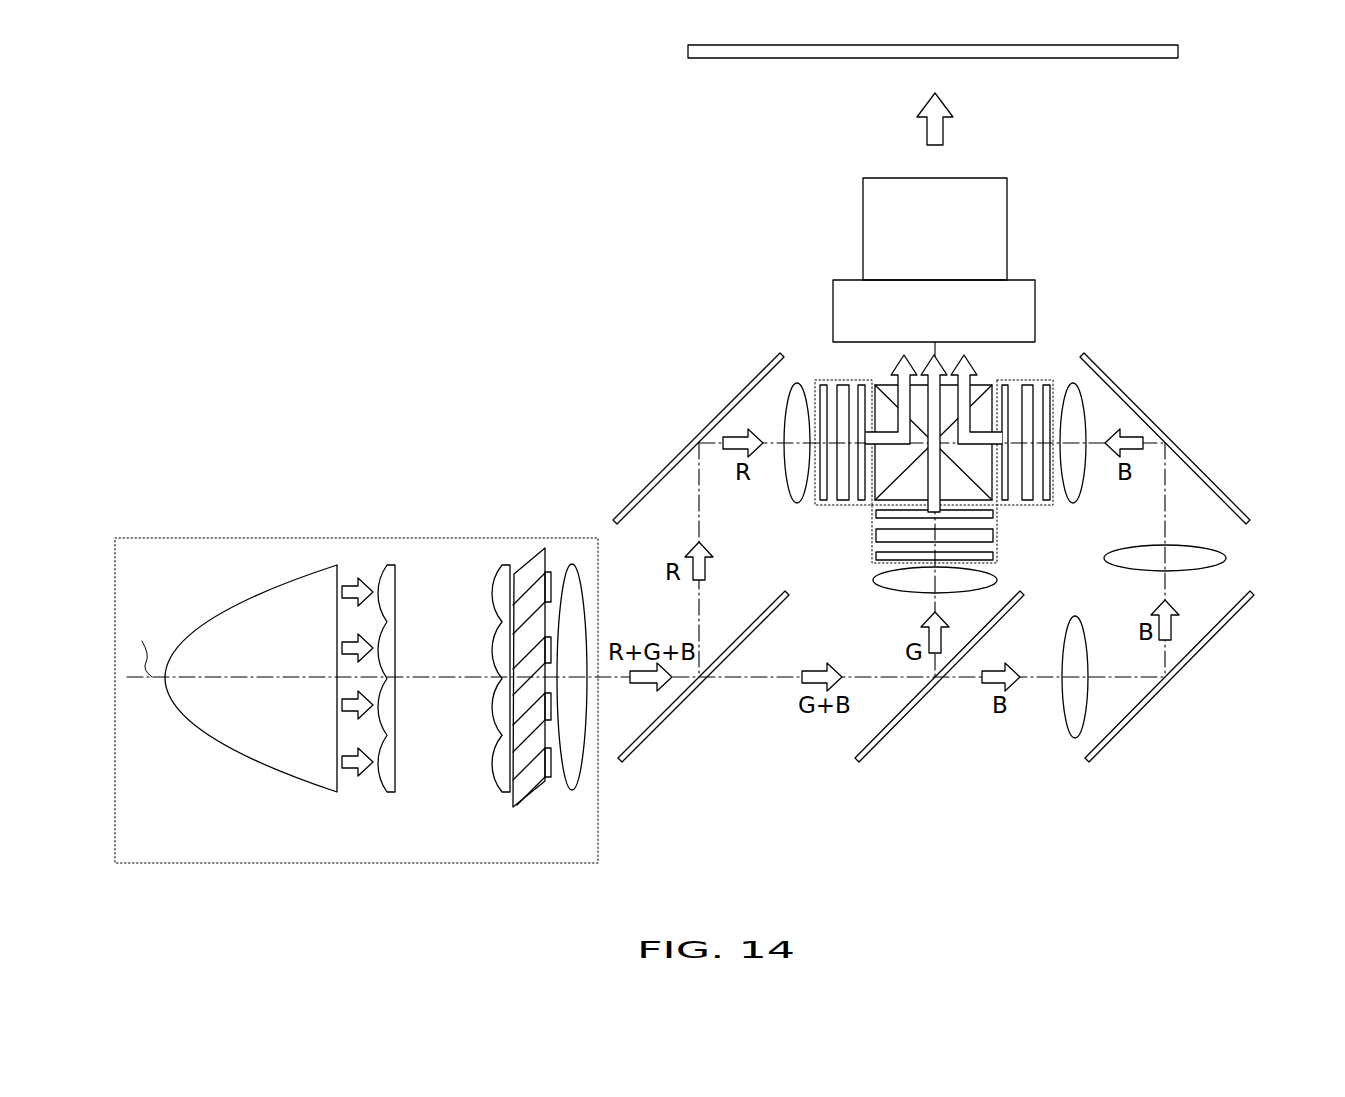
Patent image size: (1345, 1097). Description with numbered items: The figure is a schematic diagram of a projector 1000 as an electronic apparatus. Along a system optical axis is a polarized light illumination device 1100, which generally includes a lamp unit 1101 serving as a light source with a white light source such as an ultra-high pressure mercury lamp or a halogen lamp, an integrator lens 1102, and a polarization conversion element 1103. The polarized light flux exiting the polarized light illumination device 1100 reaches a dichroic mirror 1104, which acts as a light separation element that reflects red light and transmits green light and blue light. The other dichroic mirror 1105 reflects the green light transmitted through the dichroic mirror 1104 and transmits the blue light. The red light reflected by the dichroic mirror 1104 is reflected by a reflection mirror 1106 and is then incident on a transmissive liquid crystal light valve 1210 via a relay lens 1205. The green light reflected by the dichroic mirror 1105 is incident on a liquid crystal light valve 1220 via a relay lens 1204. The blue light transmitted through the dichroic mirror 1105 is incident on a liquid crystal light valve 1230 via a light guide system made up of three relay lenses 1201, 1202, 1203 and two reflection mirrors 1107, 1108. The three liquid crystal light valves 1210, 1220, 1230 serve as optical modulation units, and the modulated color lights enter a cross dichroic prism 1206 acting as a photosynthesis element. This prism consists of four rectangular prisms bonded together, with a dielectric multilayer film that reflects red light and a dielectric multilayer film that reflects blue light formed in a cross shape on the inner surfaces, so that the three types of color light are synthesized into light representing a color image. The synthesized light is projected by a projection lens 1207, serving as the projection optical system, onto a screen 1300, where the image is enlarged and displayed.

The projector 1000 is at (1293, 147).
The polarized light illumination device 1100 is at (374, 537).
The lamp unit 1101 is at (247, 770).
The integrator lens 1102 is at (386, 793).
The polarization conversion element 1103 is at (587, 812).
The dichroic mirror 1104 is at (665, 725).
The dichroic mirror 1105 is at (905, 725).
The reflection mirror 1106 is at (698, 432).
The reflection mirror 1107 is at (1130, 725).
The reflection mirror 1108 is at (1165, 432).
The relay lens 1201 is at (1075, 738).
The relay lens 1202 is at (1226, 556).
The relay lens 1203 is at (1073, 503).
The relay lens 1204 is at (872, 592).
The relay lens 1205 is at (797, 503).
The cross dichroic prism 1206 is at (955, 386).
The projection lens 1207 is at (1007, 228).
The liquid crystal light valve 1210 is at (828, 378).
The liquid crystal light valve 1220 is at (997, 552).
The liquid crystal light valve 1230 is at (1040, 378).
The screen 1300 is at (1101, 58).